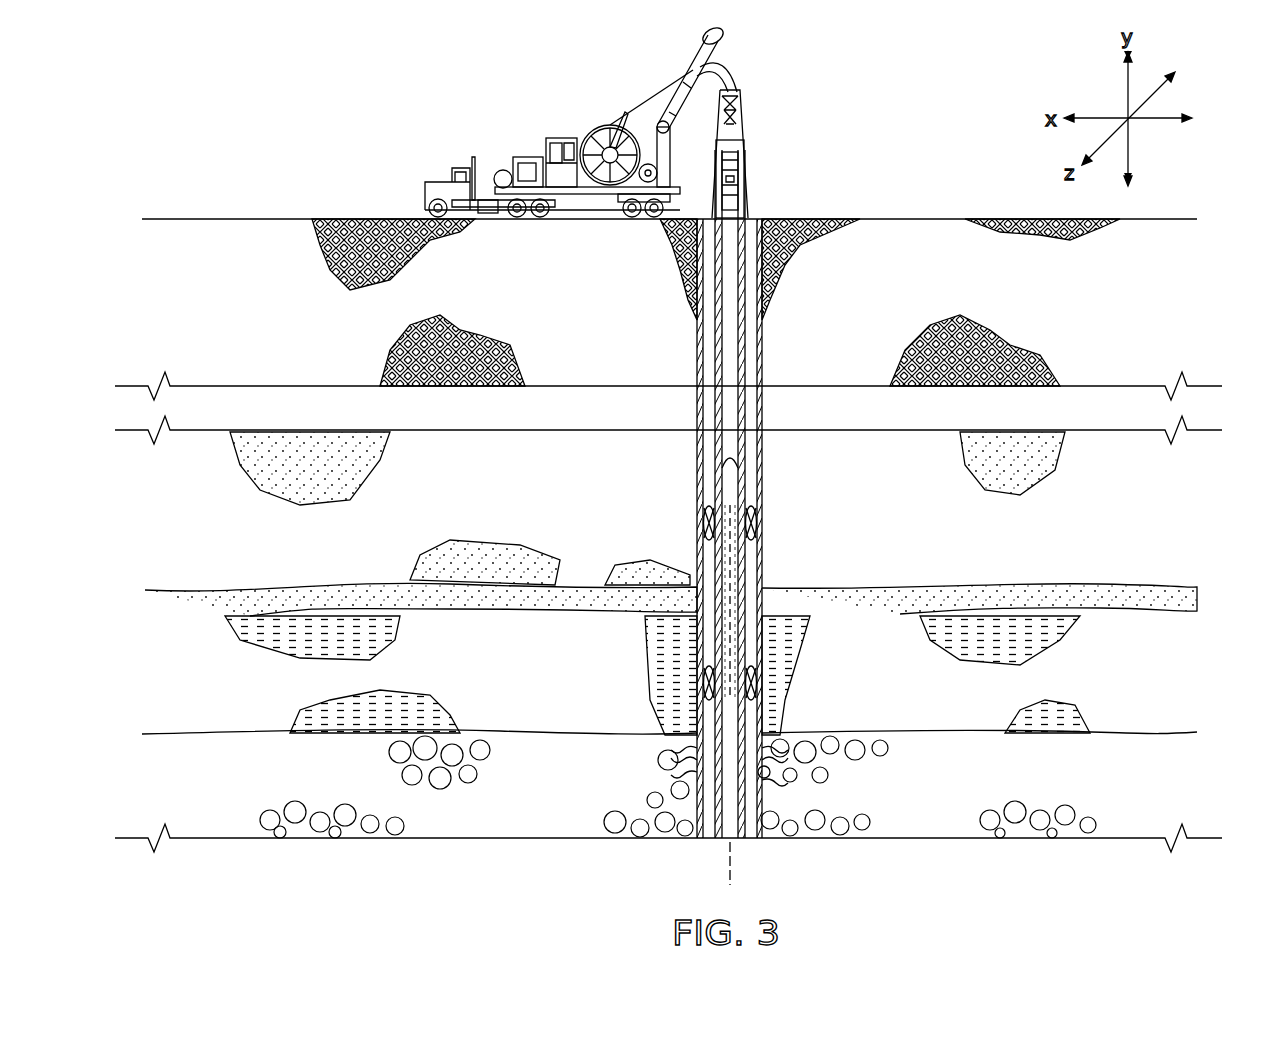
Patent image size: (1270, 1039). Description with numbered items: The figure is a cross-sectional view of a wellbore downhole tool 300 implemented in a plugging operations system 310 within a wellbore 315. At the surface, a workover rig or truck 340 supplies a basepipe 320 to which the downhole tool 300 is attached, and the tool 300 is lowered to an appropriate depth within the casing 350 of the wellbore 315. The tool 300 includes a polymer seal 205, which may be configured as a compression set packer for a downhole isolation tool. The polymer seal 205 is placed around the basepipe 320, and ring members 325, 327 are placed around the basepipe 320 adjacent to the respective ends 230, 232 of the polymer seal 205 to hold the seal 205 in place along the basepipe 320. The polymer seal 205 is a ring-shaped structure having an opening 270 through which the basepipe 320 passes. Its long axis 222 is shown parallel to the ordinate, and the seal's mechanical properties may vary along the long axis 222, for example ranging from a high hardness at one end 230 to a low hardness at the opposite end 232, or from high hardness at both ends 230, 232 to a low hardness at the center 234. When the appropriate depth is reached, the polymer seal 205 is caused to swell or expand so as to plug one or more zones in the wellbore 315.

The plugging operations system 310 is at (309, 98).
The workover rig or truck 340 is at (574, 127).
The basepipe 320 is at (740, 288).
The opening 270 is at (733, 456).
The wellbore downhole tool 300 is at (682, 509).
The polymer seal 205 is at (700, 565).
The ring member 325 is at (760, 533).
The ring member 327 is at (760, 672).
The end of compression set packer 230 is at (772, 538).
The opposite end of compression set packer 232 is at (772, 638).
The center of compression set packer 234 is at (773, 633).
The casing 350 is at (700, 752).
The wellbore 315 is at (766, 773).
The long axis 222 is at (727, 866).